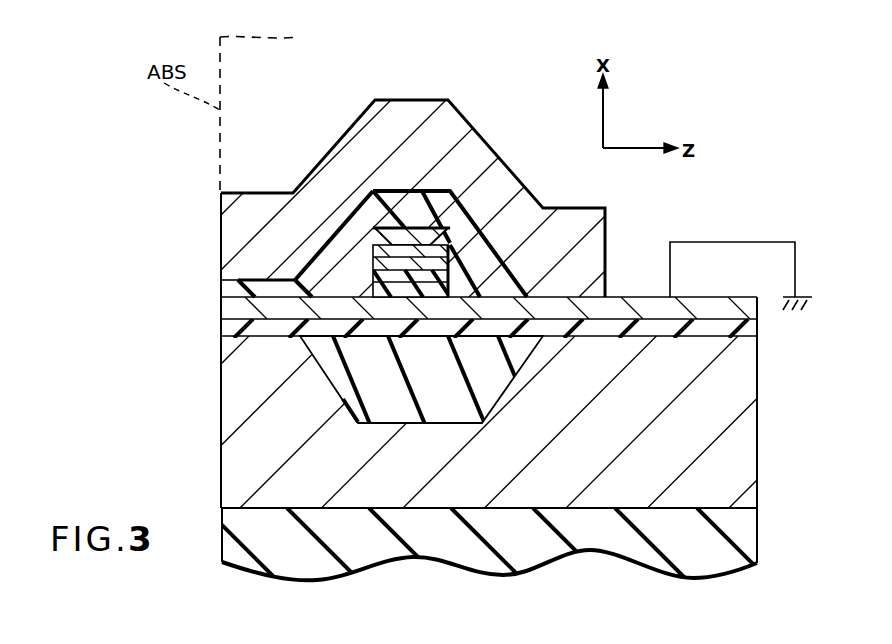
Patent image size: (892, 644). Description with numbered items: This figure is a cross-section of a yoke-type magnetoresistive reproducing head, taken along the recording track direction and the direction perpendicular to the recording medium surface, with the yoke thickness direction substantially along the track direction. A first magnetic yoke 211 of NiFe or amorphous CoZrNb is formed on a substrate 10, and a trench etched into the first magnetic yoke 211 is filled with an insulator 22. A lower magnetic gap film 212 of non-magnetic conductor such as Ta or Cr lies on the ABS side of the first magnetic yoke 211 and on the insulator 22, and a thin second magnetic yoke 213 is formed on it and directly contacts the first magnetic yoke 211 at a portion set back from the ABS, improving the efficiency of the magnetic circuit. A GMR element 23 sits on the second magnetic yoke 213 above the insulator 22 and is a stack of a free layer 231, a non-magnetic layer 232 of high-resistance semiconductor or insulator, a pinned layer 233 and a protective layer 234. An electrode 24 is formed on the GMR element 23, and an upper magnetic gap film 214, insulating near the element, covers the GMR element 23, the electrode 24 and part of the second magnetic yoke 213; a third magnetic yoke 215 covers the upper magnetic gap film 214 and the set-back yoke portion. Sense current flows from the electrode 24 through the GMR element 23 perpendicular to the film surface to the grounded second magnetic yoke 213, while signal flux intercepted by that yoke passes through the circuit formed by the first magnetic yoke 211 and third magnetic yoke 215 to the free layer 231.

The substrate 10 is at (232, 521).
The first magnetic yoke 211 is at (228, 386).
The lower magnetic gap film 212 is at (228, 326).
The second magnetic yoke 213 is at (228, 310).
The upper magnetic gap film 214 is at (228, 288).
The third magnetic yoke 215 is at (228, 232).
The insulator 22 is at (502, 372).
The GMR element 23 is at (426, 219).
The free layer 231 is at (450, 292).
The non-magnetic layer 232 is at (448, 278).
The pinned layer 233 is at (450, 262).
The protective layer 234 is at (452, 240).
The electrode 24 is at (408, 232).